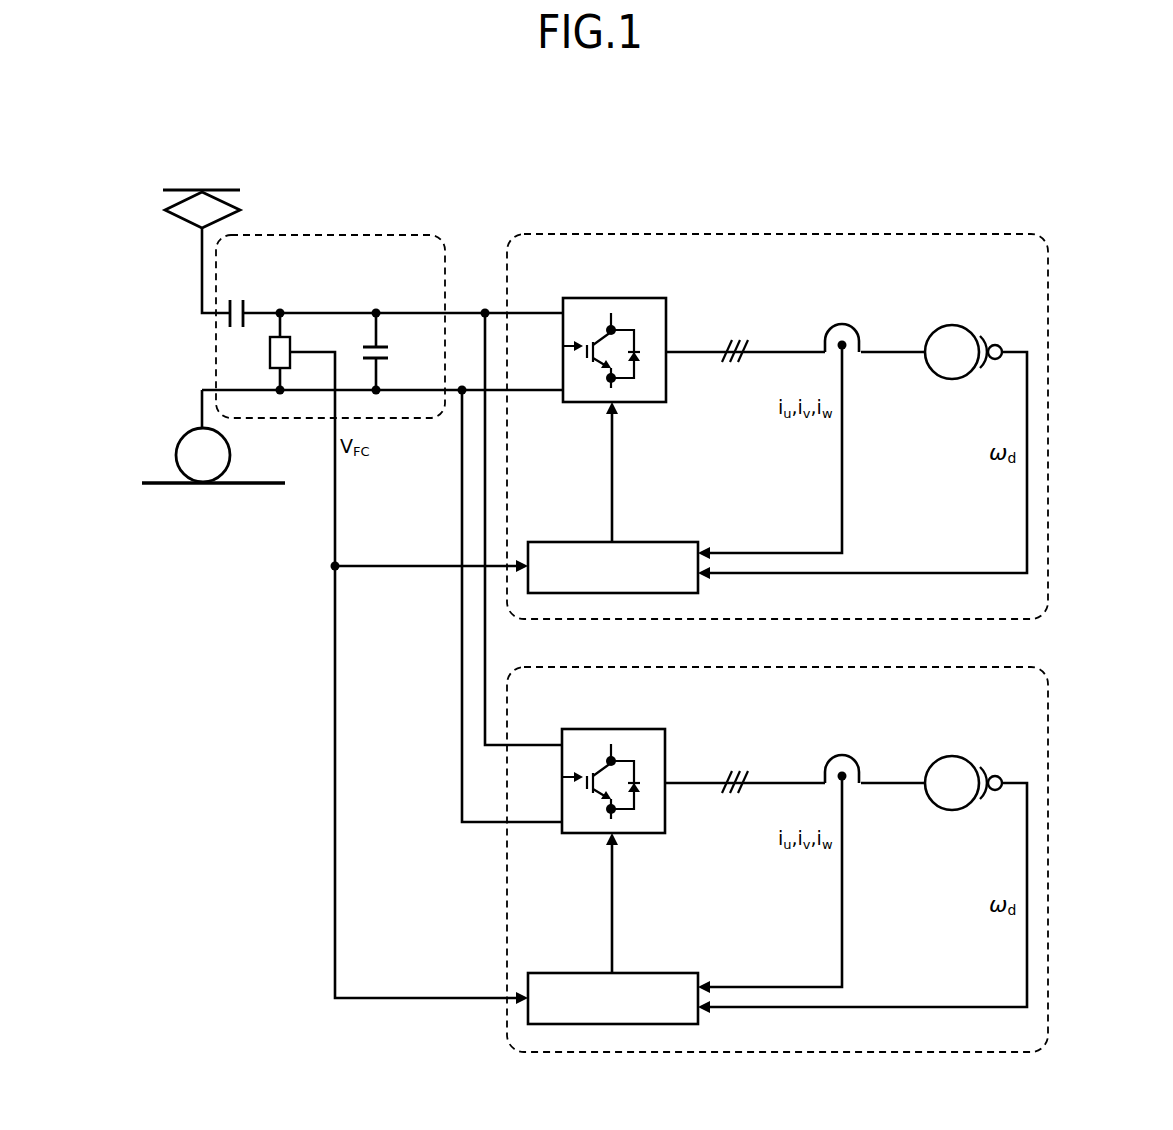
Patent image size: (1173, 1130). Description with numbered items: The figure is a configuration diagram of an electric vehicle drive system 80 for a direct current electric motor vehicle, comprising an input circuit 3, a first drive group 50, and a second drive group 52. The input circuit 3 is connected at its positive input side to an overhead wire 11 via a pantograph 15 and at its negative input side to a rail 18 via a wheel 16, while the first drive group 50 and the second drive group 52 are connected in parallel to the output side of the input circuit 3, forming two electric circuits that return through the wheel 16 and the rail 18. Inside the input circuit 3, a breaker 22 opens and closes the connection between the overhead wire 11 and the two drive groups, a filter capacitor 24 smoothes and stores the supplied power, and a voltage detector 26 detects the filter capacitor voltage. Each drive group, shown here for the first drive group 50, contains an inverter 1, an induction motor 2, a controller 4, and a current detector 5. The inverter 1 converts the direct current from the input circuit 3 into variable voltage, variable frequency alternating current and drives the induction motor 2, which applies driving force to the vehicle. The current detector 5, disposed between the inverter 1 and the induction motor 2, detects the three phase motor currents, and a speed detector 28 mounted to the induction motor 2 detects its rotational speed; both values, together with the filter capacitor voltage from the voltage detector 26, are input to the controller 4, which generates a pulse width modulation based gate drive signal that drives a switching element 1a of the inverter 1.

The electric vehicle drive system 80 is at (583, 184).
The first drive group 50 is at (887, 234).
The second drive group 52 is at (887, 667).
The input circuit 3 is at (366, 235).
The overhead wire 11 is at (228, 190).
The pantograph 15 is at (173, 215).
The breaker 22 is at (240, 300).
The voltage detector 26 is at (290, 344).
The filter capacitor 24 is at (390, 357).
The wheel 16 is at (231, 452).
The rail 18 is at (152, 480).
The inverter 1 is at (643, 298).
The switching element 1a is at (567, 346).
The current detector 5 is at (845, 324).
The induction motor 2 is at (954, 324).
The speed detector 28 is at (998, 342).
The controller 4 is at (651, 543).